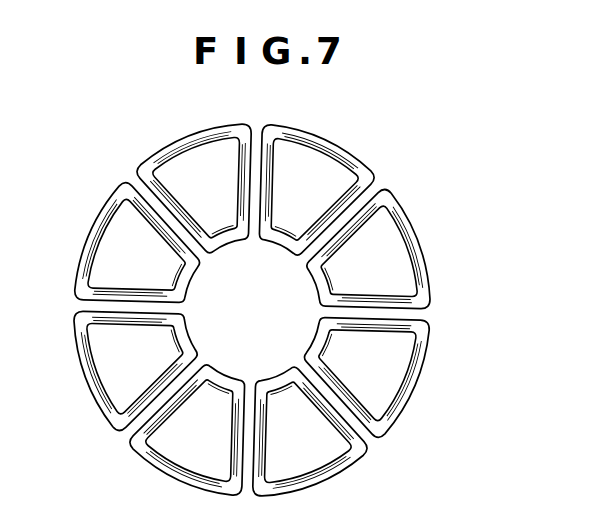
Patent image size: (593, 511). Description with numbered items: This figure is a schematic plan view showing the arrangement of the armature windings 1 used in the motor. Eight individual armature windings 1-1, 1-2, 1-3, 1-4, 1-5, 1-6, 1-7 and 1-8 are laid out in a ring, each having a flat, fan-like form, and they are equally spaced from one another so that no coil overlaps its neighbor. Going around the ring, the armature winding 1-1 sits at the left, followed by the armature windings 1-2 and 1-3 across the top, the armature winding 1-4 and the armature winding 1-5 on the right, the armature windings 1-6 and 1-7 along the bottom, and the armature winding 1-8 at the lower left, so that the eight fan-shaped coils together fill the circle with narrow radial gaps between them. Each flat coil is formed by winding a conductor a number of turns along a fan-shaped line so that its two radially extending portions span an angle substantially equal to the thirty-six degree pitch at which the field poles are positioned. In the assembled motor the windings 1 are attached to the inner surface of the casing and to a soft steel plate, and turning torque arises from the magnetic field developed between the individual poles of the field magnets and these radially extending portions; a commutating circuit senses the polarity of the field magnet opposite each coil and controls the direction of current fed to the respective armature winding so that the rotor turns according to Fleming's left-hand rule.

The armature windings 1 is at (250, 298).
The armature winding 1-1 is at (87, 235).
The armature winding 1-2 is at (172, 146).
The armature winding 1-3 is at (322, 137).
The armature winding 1-4 is at (423, 257).
The armature winding 1-5 is at (413, 393).
The armature winding 1-6 is at (337, 480).
The armature winding 1-7 is at (176, 472).
The armature winding 1-8 is at (85, 381).